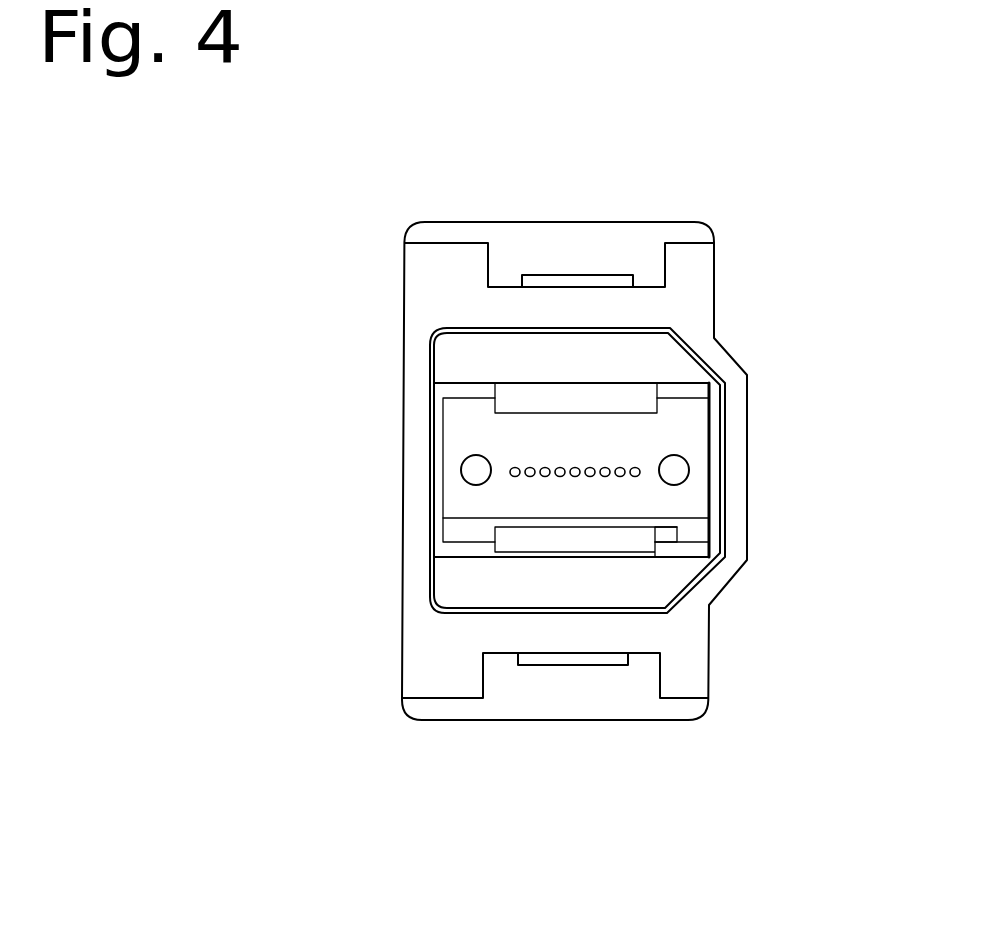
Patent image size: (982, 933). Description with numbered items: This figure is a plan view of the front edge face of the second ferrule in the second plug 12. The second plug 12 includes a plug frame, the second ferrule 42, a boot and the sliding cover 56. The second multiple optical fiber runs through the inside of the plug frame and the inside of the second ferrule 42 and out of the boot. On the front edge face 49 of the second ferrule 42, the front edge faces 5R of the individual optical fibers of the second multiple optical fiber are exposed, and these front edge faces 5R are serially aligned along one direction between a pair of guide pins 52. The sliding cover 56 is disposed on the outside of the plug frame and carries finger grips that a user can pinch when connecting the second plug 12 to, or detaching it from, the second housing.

The second plug 12 is at (584, 145).
The sliding cover 56 is at (687, 223).
The front edge face 49 is at (660, 438).
The guide pins 52 is at (476, 470).
The second ferrule 42 is at (680, 543).
The front edge faces 5R is at (643, 483).